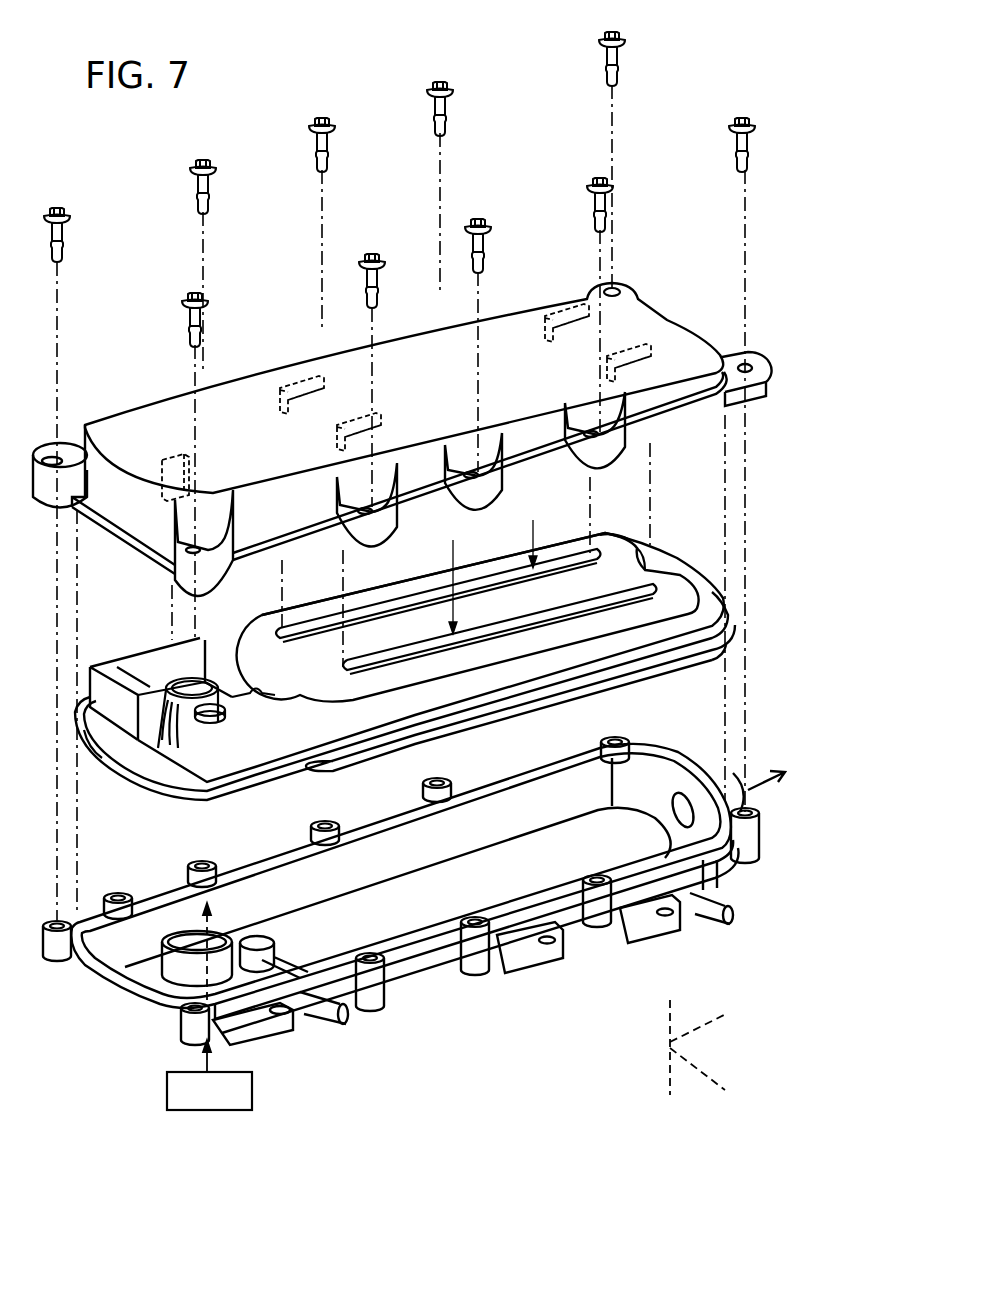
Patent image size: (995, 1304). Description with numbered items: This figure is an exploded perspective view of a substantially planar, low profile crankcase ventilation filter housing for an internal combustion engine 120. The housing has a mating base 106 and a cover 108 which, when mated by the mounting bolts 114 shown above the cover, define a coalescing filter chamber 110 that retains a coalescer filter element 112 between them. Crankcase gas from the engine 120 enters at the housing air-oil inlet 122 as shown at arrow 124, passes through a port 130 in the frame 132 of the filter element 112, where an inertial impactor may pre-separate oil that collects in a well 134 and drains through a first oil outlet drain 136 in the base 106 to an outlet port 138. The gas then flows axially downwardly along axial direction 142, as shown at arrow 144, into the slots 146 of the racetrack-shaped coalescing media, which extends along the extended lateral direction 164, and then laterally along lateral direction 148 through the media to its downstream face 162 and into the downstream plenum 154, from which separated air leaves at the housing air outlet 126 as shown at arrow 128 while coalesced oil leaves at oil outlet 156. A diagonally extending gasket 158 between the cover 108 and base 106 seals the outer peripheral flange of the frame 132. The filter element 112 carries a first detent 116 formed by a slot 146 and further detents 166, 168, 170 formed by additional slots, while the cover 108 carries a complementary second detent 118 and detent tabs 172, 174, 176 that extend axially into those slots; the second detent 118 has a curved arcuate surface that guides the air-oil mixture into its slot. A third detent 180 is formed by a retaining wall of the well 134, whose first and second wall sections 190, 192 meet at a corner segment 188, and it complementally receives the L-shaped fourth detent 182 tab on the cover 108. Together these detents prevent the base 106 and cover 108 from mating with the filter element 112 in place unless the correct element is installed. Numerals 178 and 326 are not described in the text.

The base 106 is at (122, 992).
The cover 108 is at (120, 483).
The coalescing filter chamber 110 is at (560, 838).
The coalescer filter element 112 is at (700, 552).
The mounting bolts 114 is at (200, 190).
The first detent 116 is at (620, 597).
The second detent 118 is at (622, 355).
The engine 120 is at (222, 1110).
The housing air-oil inlet 122 is at (178, 958).
The arrow 124 is at (216, 907).
The housing air outlet 126 is at (645, 790).
The arrow 128 is at (746, 808).
The port 130 is at (180, 685).
The frame 132 is at (97, 715).
The well 134 is at (258, 692).
The first oil outlet drain 136 is at (265, 938).
The outlet port 138 is at (346, 1018).
The axial direction 142 is at (652, 477).
The arrow 144 is at (533, 540).
The slots 146 is at (533, 580).
The lateral direction 148 is at (707, 1085).
The downstream plenum 154 is at (478, 903).
The oil outlet 156 is at (730, 917).
The gasket 158 is at (248, 786).
The downstream face 162 is at (630, 662).
The extended lateral direction 164 is at (708, 1025).
The further detent 166 is at (572, 550).
The further detent 168 is at (347, 662).
The further detent 170 is at (283, 628).
The detent tab 172 is at (548, 316).
The detent tab 174 is at (336, 444).
The detent tab 176 is at (280, 408).
The clip 178 is at (607, 378).
The third detent 180 is at (170, 704).
The fourth detent 182 is at (172, 450).
The corner segment 188 is at (174, 708).
The first wall section 190 is at (168, 702).
The second wall section 192 is at (210, 724).
The plate corner 326 is at (100, 737).